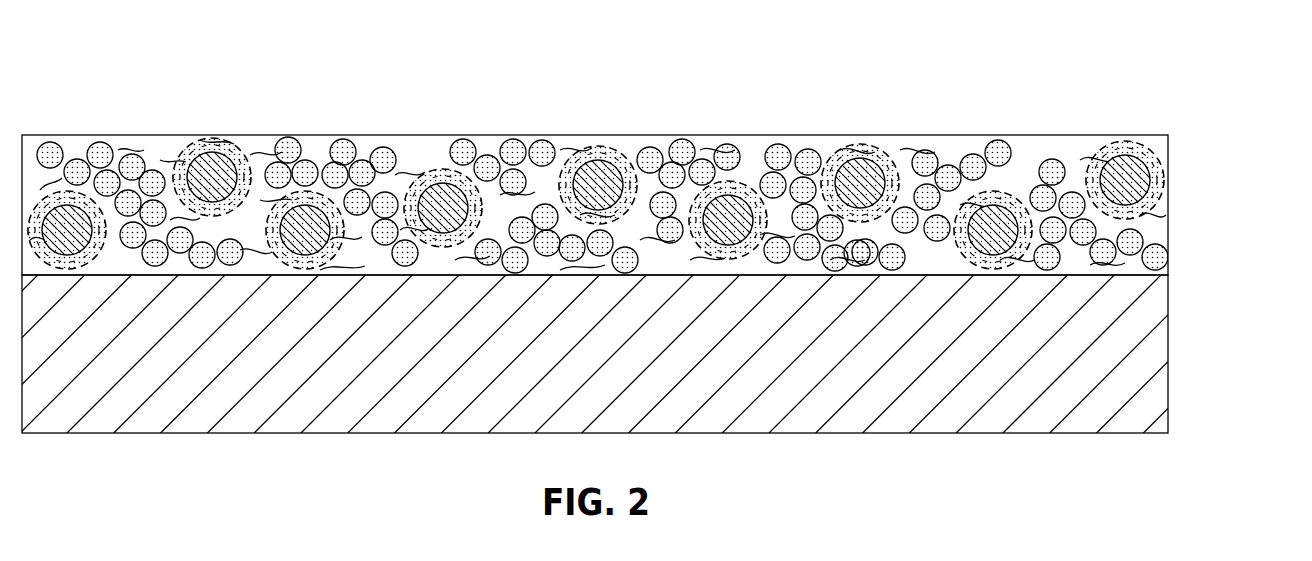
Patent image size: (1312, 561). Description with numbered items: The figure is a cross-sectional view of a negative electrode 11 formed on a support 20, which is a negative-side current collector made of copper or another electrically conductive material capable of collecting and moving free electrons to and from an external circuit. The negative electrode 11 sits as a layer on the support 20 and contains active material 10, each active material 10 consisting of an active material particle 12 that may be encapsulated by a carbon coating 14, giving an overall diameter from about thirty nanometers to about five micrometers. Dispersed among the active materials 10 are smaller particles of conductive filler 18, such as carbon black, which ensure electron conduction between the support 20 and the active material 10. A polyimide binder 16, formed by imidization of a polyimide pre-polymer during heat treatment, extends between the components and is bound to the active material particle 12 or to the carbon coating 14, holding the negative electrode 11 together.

The active material 10 is at (634, 151).
The negative electrode 11 is at (1182, 196).
The active material particle 12 is at (1125, 158).
The carbon coating 14 is at (1140, 142).
The polyimide binder 16 is at (1026, 165).
The conductive filler 18 is at (946, 167).
The support 20 is at (1118, 338).